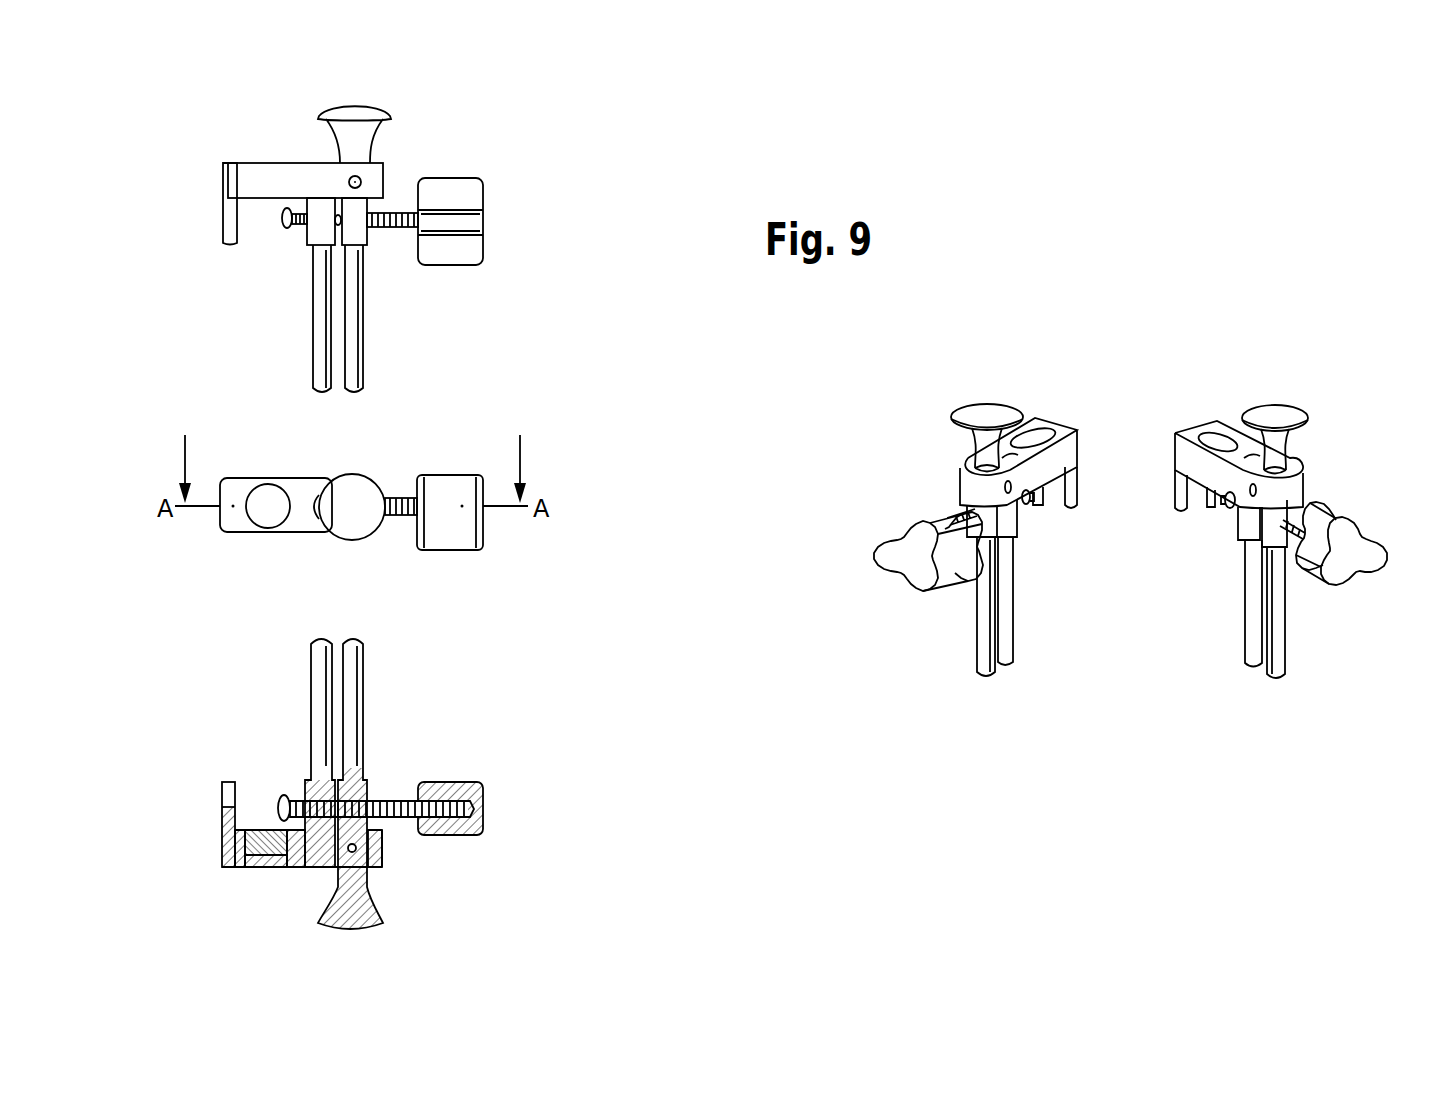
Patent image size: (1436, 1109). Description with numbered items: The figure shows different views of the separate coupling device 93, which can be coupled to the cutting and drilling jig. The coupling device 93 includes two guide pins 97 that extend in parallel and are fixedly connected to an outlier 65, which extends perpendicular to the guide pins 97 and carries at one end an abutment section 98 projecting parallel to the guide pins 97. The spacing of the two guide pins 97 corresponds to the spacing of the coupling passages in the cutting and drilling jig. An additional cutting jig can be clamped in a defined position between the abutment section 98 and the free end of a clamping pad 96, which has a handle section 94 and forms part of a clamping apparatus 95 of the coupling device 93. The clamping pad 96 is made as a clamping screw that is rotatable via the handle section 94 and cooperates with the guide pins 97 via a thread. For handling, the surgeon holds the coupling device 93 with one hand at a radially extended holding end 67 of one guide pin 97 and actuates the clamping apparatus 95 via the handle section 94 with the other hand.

The outlier 65 is at (287, 173).
The radially extended holding end 67 is at (366, 118).
The separate coupling device 93 is at (493, 165).
The handle section 94 is at (460, 250).
The clamping apparatus 95 is at (442, 840).
The clamping pad 96 is at (302, 232).
The guide pins 97 is at (350, 322).
The abutment section 98 is at (226, 222).